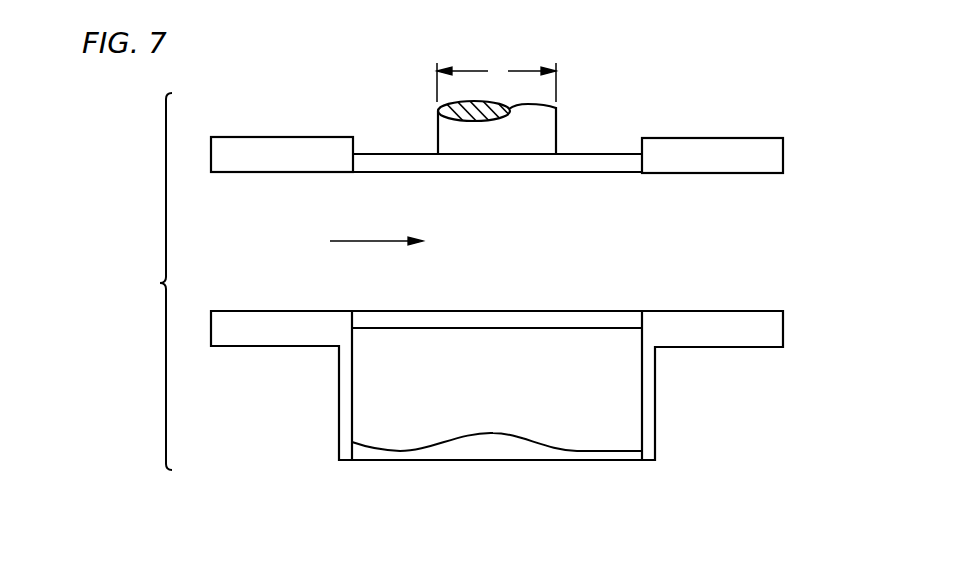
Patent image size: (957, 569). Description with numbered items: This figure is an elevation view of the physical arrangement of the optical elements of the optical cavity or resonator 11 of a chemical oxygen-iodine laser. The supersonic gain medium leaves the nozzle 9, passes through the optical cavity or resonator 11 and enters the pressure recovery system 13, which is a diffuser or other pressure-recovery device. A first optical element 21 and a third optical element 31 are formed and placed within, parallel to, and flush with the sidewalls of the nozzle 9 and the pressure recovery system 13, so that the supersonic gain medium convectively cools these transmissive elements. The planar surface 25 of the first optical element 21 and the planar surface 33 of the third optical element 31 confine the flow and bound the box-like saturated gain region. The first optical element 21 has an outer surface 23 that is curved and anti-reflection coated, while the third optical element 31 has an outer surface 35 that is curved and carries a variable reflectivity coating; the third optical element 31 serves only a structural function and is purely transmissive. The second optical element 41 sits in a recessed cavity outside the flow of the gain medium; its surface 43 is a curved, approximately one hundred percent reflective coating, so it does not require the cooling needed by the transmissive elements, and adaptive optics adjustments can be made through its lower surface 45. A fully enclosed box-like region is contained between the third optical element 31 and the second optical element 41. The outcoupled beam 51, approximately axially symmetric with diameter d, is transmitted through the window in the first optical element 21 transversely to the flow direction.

The nozzle 9 is at (252, 252).
The optical cavity or resonator 11 is at (517, 252).
The pressure recovery system 13 is at (770, 252).
The first optical element 21 is at (536, 156).
The outer surface of first optical element 23 is at (610, 155).
The planar surface of first optical element 25 is at (610, 173).
The outcoupled beam 51 is at (523, 137).
The third optical element 31 is at (535, 328).
The planar surface of third optical element 33 is at (612, 311).
The outer surface of third optical element 35 is at (610, 328).
The second optical element 41 is at (538, 433).
The reflective surface of second optical element 43 is at (605, 450).
The lower surface of second optical element 45 is at (610, 460).